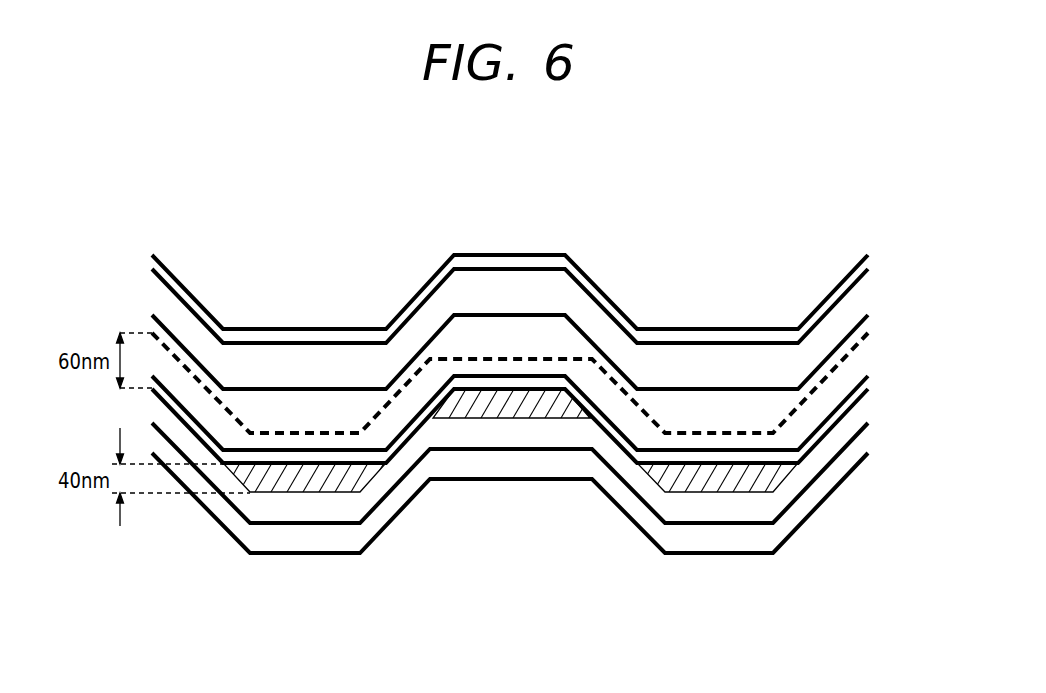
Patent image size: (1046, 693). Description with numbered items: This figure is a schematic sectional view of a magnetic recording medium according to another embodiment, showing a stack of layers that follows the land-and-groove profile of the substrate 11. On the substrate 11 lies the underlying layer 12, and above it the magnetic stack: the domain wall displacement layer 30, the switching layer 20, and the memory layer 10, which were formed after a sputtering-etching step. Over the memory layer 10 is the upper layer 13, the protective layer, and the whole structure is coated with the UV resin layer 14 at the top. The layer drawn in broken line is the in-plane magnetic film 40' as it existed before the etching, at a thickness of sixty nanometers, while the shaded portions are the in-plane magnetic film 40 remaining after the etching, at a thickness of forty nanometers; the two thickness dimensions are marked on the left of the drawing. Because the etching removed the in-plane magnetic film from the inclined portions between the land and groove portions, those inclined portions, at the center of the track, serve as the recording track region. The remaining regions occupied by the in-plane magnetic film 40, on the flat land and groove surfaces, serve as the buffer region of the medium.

The UV resin layer 14 is at (867, 262).
The upper layer 13 is at (867, 302).
The memory layer 10 is at (867, 352).
The in-plane magnetic film before etching 40' is at (510, 316).
The switching layer 20 is at (867, 381).
The domain wall displacement layer 30 is at (867, 409).
The in-plane magnetic film after etching 40 is at (510, 513).
The underlying layer 12 is at (867, 439).
The substrate 11 is at (523, 548).